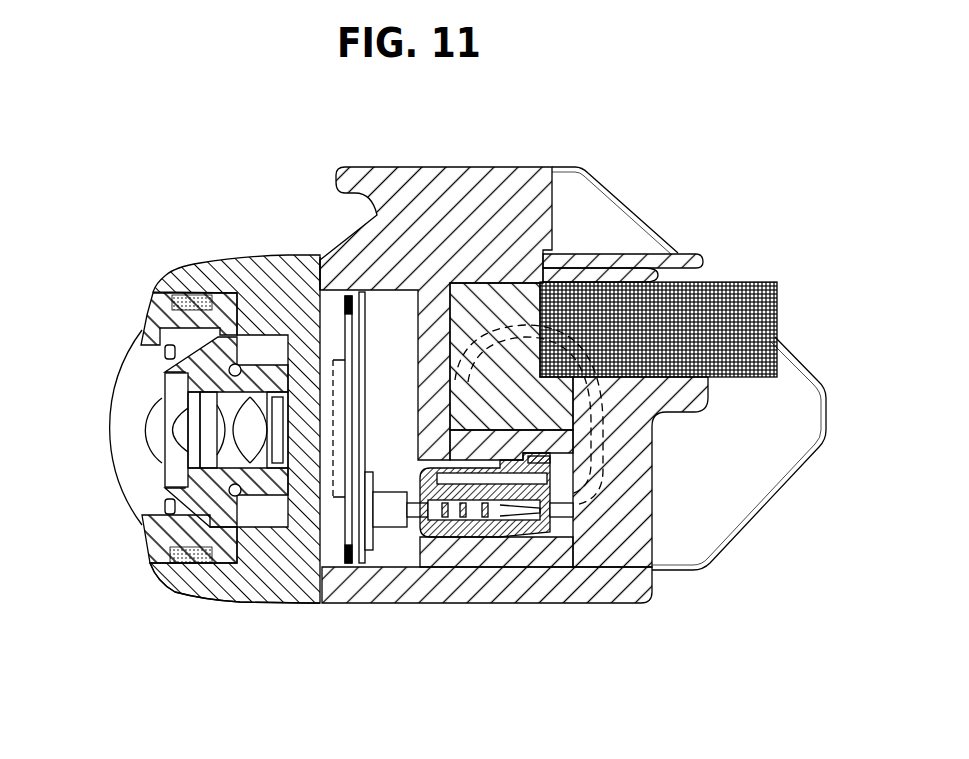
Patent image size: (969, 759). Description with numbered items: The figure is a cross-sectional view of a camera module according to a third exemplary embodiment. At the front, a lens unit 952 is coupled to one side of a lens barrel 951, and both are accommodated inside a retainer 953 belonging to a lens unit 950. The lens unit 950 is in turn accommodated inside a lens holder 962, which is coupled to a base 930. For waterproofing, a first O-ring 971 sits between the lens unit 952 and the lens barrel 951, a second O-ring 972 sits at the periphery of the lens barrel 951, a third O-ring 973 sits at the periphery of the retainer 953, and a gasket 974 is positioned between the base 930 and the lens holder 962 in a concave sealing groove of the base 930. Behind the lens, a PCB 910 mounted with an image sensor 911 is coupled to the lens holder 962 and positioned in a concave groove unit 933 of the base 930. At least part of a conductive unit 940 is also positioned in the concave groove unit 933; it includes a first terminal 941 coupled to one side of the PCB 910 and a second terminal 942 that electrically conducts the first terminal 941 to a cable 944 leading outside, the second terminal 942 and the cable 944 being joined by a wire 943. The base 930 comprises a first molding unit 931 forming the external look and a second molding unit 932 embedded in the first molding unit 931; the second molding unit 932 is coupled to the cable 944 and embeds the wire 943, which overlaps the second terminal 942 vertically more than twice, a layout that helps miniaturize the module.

The base 930 is at (603, 385).
The first molding unit 931 is at (697, 535).
The second molding unit 932 is at (632, 478).
The concave groove unit 933 is at (381, 327).
The cable 944 is at (752, 281).
The lens unit 950 is at (140, 563).
The lens barrel 951 is at (160, 335).
The lens unit 952 is at (104, 414).
The retainer 953 is at (157, 312).
The lens holder 962 is at (196, 604).
The first O-ring 971 is at (162, 351).
The second O-ring 972 is at (234, 363).
The third O-ring 973 is at (183, 300).
The gasket 974 is at (347, 292).
The PCB 910 is at (364, 565).
The image sensor 911 is at (348, 499).
The conductive unit 940 is at (484, 517).
The first terminal 941 is at (403, 527).
The second terminal 942 is at (478, 520).
The wire 943 is at (562, 512).